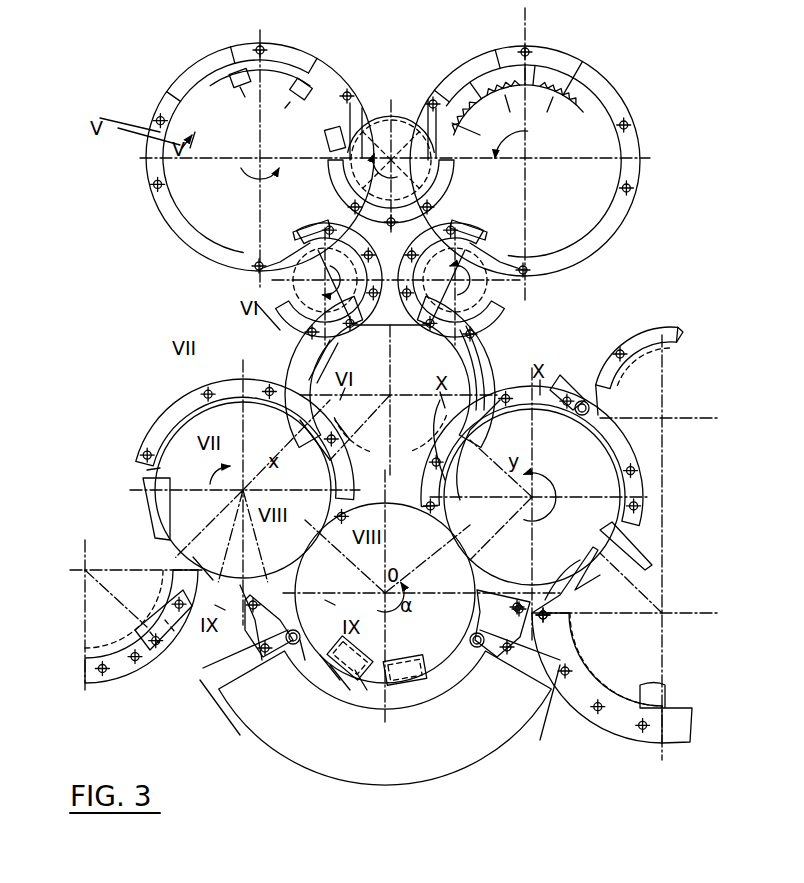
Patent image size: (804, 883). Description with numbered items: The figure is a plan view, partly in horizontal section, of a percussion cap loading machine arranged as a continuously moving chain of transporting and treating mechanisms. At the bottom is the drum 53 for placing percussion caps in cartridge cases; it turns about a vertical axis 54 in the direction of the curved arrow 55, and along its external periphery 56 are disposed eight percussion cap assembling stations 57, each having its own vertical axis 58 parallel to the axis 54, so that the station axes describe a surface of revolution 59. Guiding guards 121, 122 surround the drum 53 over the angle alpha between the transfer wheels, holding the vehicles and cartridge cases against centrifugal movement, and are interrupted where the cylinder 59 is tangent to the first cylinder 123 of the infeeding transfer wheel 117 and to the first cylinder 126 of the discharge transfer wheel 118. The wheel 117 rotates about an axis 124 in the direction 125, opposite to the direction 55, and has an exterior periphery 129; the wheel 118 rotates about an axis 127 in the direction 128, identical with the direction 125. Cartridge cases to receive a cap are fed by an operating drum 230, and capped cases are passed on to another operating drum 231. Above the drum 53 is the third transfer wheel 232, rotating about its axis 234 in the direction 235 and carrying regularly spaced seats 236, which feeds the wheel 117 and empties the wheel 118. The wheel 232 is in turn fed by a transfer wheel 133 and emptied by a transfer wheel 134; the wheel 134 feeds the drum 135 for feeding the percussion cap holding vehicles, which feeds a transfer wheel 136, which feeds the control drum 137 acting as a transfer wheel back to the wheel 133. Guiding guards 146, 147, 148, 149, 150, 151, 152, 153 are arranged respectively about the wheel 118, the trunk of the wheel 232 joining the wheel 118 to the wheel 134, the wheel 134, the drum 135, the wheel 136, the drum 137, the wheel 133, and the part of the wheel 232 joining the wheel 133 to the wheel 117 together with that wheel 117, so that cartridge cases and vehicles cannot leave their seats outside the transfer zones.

The drum 53 is at (437, 645).
The vertical axis 54 is at (352, 670).
The direction of rotation 55 is at (358, 595).
The external periphery 56 is at (515, 609).
The percussion cap assembling station 57 is at (383, 677).
The vertical axis of assembling station 58 is at (347, 683).
The surface of revolution 59 is at (340, 662).
The transfer wheel 117 is at (177, 462).
The second transfer wheel 118 is at (593, 530).
The guiding guard 121 is at (253, 630).
The guiding guard 122 is at (297, 658).
The first cylinder 123 is at (164, 631).
The axis 124 is at (222, 536).
The direction of rotation 125 is at (218, 478).
The first cylinder 126 is at (545, 600).
The axis 127 is at (535, 495).
The direction of rotation 128 is at (513, 480).
The exterior periphery 129 is at (155, 473).
The transfer wheel 133 is at (290, 283).
The transfer wheel 134 is at (483, 290).
The drum 135 is at (592, 178).
The transfer wheel 136 is at (384, 120).
The control drum 137 is at (202, 110).
The guiding guard 146 is at (620, 348).
The guiding guard 147 is at (552, 382).
The guiding guard 148 is at (458, 218).
The guiding guard 149 is at (610, 217).
The guiding guard 150 is at (293, 62).
The guiding guard 151 is at (323, 218).
The guiding guard 152 is at (297, 350).
The guiding guard 153 is at (170, 422).
The operating drum 230 is at (100, 625).
The operating drum 231 is at (627, 680).
The third transfer wheel 232 is at (492, 348).
The axis 234 is at (388, 390).
The direction of rotation 235 is at (388, 400).
The seats 236 is at (450, 498).